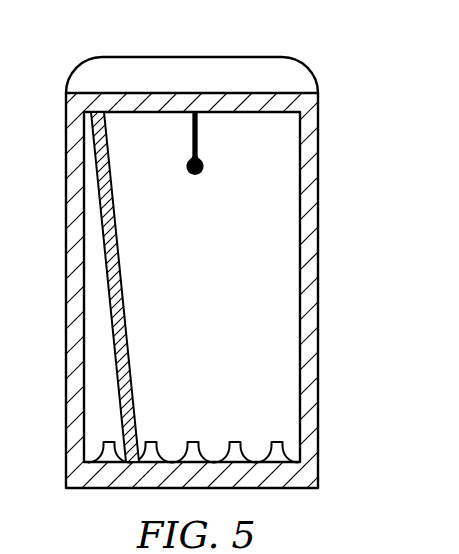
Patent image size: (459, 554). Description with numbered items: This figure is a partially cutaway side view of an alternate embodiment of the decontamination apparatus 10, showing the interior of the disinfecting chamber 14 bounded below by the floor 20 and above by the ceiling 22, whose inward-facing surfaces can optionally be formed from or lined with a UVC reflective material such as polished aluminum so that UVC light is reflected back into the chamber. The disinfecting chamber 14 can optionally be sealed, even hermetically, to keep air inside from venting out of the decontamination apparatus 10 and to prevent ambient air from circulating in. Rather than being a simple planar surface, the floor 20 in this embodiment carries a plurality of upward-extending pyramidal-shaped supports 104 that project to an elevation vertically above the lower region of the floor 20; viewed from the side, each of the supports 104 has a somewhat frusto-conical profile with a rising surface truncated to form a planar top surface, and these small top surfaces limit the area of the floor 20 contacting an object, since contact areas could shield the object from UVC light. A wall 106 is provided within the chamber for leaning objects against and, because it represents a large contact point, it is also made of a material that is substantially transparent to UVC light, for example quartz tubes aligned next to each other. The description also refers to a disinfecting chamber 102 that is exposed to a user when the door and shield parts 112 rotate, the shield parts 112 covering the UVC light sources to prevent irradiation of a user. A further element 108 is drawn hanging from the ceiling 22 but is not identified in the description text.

The decontamination apparatus 10 is at (229, 277).
The disinfecting chamber 14 is at (217, 264).
The floor 20 is at (205, 460).
The ceiling 22 is at (275, 112).
The disinfecting chamber 102 is at (138, 277).
The pyramidal-shaped supports 104 is at (108, 450).
The wall 106 is at (107, 253).
The hanging sensor probe 108 is at (198, 128).
The shield parts 112 is at (456, 547).